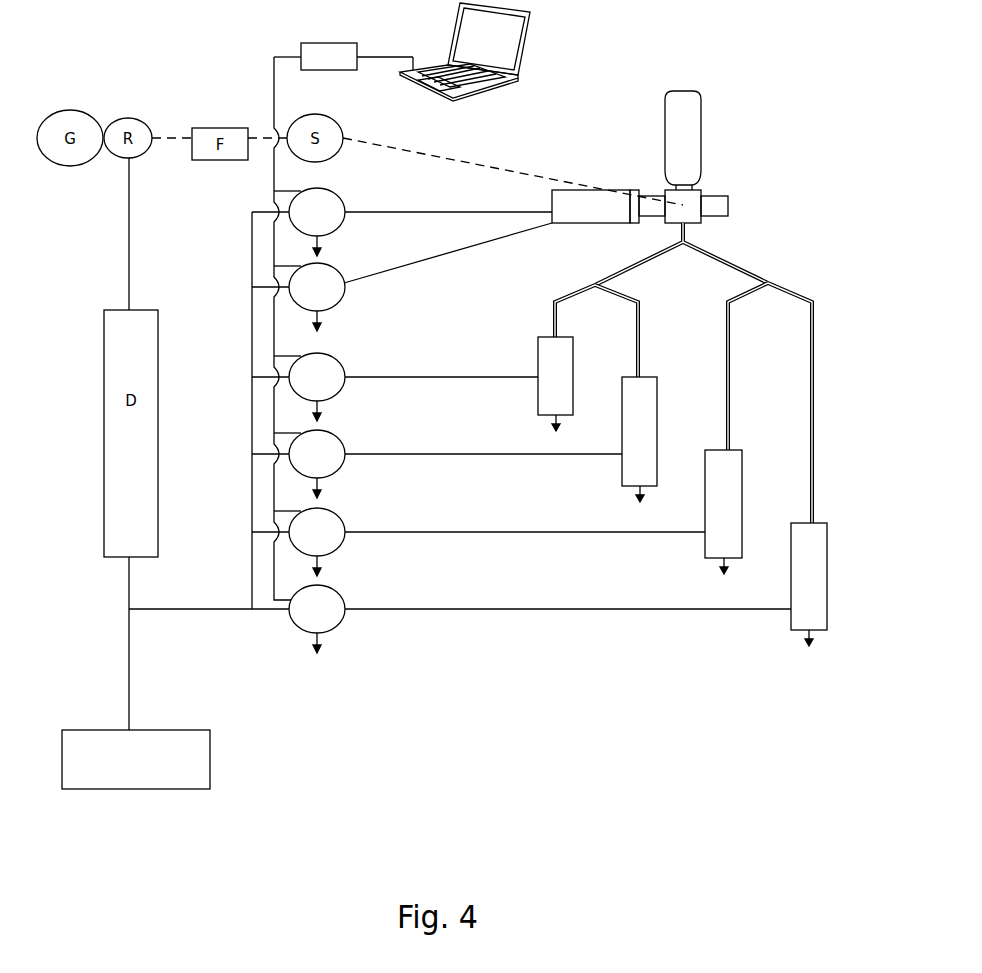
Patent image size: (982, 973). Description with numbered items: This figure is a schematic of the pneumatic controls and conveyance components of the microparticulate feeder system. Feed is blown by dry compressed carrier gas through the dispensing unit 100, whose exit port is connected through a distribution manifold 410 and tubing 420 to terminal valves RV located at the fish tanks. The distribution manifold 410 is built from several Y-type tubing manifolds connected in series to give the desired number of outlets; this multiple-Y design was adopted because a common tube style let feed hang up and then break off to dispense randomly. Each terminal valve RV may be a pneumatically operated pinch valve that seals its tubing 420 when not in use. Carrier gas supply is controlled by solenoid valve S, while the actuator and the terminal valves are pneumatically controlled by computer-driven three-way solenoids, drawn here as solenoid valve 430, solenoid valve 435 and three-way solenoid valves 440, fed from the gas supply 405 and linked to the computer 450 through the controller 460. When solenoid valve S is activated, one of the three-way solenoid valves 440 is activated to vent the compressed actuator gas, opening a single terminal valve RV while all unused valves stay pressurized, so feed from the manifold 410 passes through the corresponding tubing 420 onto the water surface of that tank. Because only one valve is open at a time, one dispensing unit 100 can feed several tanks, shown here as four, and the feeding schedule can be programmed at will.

The dispensing unit 100 is at (703, 186).
The gas supply 405 is at (210, 767).
The distribution manifold 410 is at (740, 258).
The tubing 420 is at (557, 316).
The solenoid S3 430 is at (328, 190).
The three-way solenoid valve 435 is at (343, 293).
The three-way solenoid valve S3 440 is at (337, 358).
The computer 450 is at (532, 68).
The controller 460 is at (343, 56).